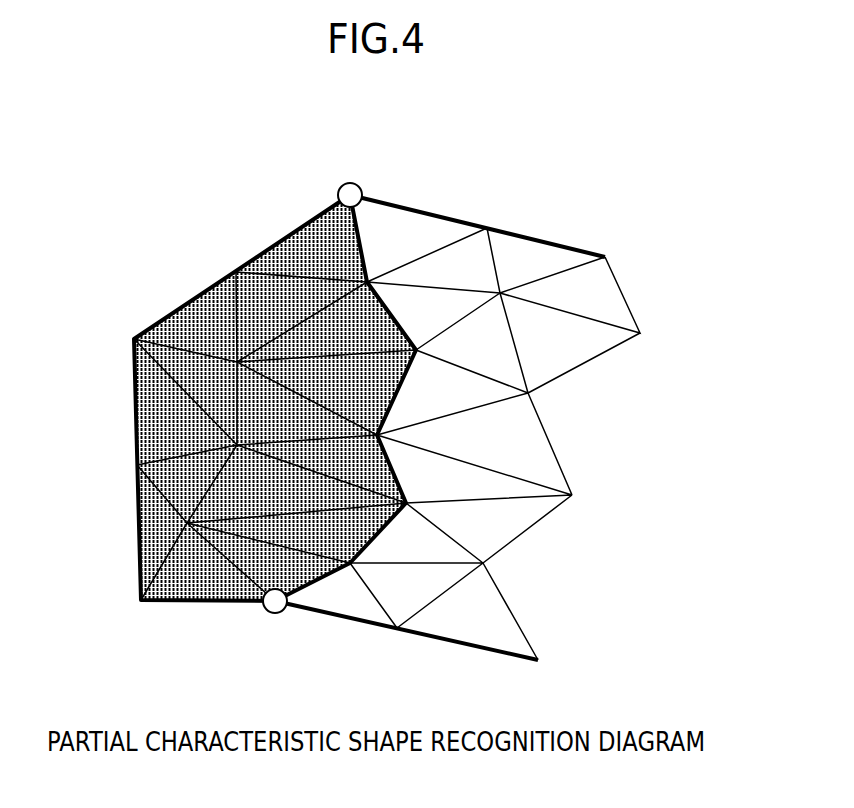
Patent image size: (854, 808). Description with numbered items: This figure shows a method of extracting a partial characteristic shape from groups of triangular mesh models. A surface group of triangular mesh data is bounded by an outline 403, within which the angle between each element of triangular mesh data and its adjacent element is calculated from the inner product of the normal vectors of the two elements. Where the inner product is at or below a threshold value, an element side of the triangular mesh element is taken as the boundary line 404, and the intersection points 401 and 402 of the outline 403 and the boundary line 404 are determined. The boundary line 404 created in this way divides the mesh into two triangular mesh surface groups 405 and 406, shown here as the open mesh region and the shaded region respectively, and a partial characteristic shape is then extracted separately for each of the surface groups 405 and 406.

The intersection point 401 is at (350, 195).
The intersection point 402 is at (275, 601).
The outline of surface group 403 is at (190, 304).
The boundary line 404 is at (395, 470).
The triangular mesh surface group 405 is at (586, 312).
The triangular mesh surface group 406 is at (153, 423).